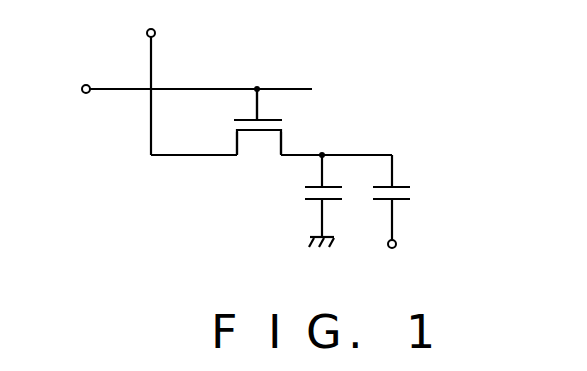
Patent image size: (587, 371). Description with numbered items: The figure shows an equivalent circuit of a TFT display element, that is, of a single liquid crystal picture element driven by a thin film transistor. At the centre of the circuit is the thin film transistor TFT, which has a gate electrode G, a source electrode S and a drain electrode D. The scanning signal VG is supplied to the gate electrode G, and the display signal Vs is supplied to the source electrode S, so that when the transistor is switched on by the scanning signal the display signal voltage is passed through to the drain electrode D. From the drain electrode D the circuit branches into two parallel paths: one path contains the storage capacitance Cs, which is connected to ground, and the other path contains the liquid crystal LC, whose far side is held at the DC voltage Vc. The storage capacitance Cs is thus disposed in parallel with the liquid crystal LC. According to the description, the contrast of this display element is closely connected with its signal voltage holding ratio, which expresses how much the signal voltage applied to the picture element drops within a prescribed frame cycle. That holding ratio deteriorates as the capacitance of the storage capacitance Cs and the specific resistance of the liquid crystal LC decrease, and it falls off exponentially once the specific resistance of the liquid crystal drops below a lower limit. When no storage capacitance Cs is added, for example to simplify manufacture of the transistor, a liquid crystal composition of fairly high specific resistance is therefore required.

The display signal Vs is at (167, 27).
The scanning signal VG is at (65, 87).
The thin film transistor TFT is at (319, 115).
The gate electrode G is at (270, 107).
The source electrode S is at (224, 143).
The drain electrode D is at (296, 143).
The storage capacitance Cs is at (303, 201).
The liquid crystal LC is at (411, 209).
The DC voltage Vc is at (409, 247).